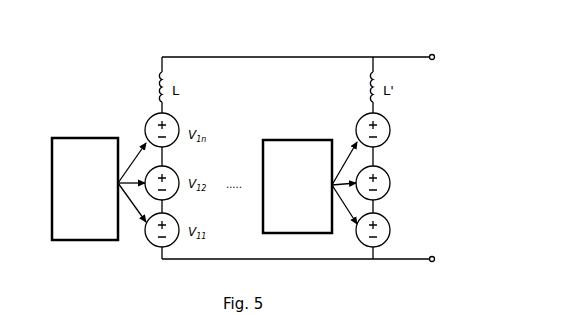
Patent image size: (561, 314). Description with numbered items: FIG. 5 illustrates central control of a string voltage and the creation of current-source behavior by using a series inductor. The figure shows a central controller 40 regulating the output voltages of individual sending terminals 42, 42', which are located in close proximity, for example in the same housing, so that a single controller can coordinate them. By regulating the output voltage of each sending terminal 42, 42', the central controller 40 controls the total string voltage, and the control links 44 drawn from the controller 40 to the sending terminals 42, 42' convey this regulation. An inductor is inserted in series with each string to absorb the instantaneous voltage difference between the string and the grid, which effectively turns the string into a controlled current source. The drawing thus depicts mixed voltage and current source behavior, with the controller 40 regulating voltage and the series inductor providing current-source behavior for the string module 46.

The central controller 40 is at (52, 178).
The sending terminal 42 is at (179, 174).
The sending terminal 42' is at (392, 173).
The control signal lines 44 is at (127, 217).
The second converter module 46 is at (401, 173).